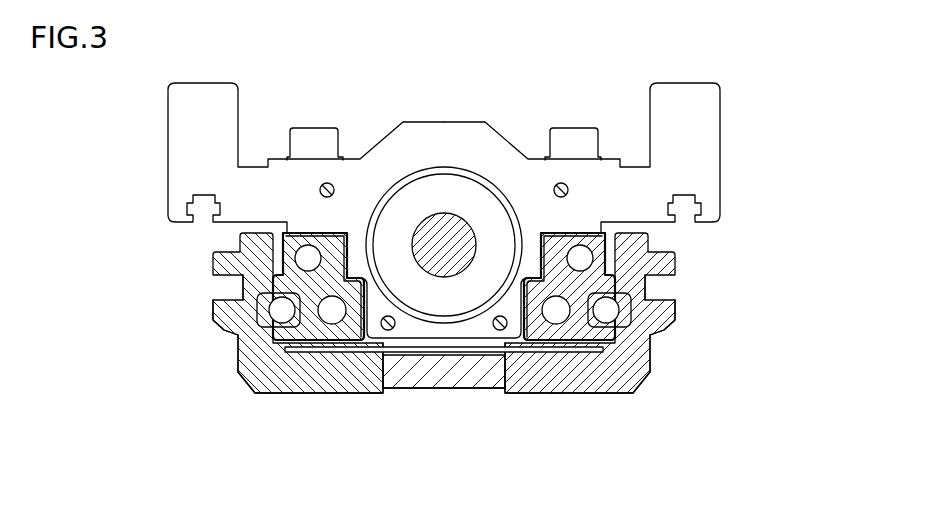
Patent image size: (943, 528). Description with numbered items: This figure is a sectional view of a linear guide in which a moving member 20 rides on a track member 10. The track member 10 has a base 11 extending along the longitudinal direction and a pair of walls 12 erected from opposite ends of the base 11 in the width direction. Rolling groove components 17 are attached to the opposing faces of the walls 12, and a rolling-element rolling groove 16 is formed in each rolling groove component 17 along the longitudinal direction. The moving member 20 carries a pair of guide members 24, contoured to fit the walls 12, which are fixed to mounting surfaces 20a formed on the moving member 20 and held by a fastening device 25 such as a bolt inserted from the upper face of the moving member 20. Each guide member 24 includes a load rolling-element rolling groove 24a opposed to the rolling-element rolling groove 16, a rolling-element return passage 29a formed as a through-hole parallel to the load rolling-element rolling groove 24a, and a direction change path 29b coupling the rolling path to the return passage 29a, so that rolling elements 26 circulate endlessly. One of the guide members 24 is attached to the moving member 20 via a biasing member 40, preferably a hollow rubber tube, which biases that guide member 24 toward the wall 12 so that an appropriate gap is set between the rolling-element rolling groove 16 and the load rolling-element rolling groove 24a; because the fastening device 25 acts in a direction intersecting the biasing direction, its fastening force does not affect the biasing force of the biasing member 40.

The track member 10 is at (561, 355).
The base 11 is at (470, 390).
The wall 12 is at (243, 357).
The rolling-element rolling groove 16 is at (258, 322).
The rolling groove component 17 is at (250, 308).
The moving member 20 is at (705, 147).
The mounting surface 20a is at (336, 233).
The guide member 24 is at (319, 332).
The load rolling-element rolling groove 24a is at (280, 342).
The fastening device 25 is at (576, 128).
The rolling element 26 is at (256, 293).
The rolling-element return passage 29a is at (331, 326).
The direction change path 29b is at (300, 336).
The biasing member 40 is at (357, 353).